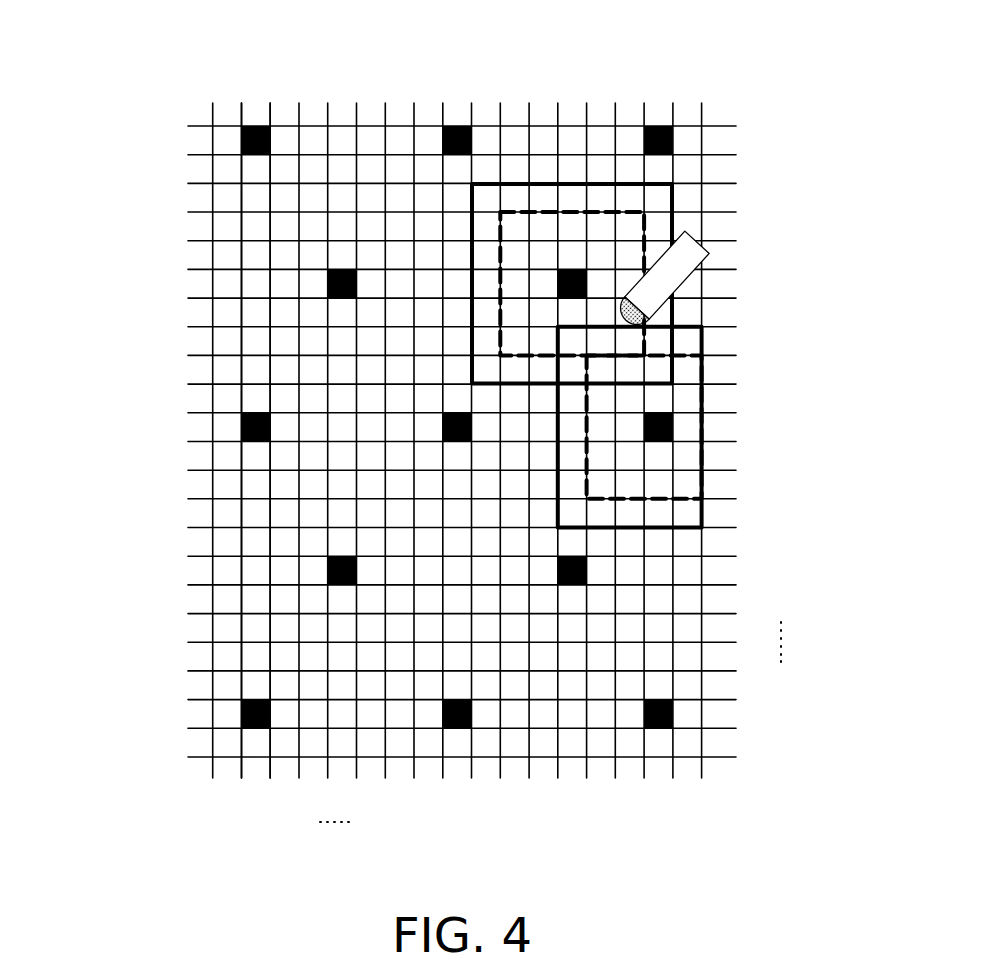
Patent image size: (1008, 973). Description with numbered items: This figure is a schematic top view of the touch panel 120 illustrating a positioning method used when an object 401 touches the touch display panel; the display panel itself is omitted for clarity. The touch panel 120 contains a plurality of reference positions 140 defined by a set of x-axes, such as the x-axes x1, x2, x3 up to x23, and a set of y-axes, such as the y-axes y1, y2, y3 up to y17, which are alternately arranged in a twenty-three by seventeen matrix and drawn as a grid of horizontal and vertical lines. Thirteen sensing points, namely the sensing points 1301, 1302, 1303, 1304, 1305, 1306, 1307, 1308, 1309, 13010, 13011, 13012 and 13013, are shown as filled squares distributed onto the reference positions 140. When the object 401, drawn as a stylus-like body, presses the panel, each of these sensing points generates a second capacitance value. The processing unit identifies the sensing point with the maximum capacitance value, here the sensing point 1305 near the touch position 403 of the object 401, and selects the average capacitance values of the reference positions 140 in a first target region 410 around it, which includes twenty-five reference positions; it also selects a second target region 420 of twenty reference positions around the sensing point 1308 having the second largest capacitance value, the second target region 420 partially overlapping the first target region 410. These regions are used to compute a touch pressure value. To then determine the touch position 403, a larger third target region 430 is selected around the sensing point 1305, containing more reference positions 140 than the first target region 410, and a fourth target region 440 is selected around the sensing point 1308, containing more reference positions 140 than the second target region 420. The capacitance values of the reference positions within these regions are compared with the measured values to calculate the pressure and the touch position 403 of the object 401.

The touch panel 120 is at (750, 72).
The sensing point 1301 is at (254, 125).
The sensing point 1302 is at (454, 125).
The sensing point 1303 is at (654, 125).
The sensing point 1304 is at (327, 283).
The sensing point 1305 is at (587, 281).
The sensing point 1306 is at (242, 428).
The sensing point 1307 is at (466, 412).
The sensing point 1308 is at (673, 425).
The sensing point 1309 is at (327, 570).
The sensing point 13010 is at (587, 571).
The sensing point 13011 is at (242, 712).
The sensing point 13012 is at (457, 729).
The sensing point 13013 is at (656, 729).
The reference positions 140 is at (225, 142).
The object 401 is at (694, 259).
The touch position 403 is at (623, 322).
The first target region 410 is at (645, 222).
The second target region 420 is at (683, 355).
The third target region 430 is at (674, 196).
The fourth target region 440 is at (683, 527).
The x-axis x1 is at (720, 757).
The x-axis x2 is at (720, 728).
The x-axis x3 is at (720, 700).
The x-axis x23 is at (723, 127).
The y-axis y1 is at (213, 762).
The y-axis y2 is at (242, 762).
The y-axis y3 is at (271, 762).
The y-axis y17 is at (703, 768).